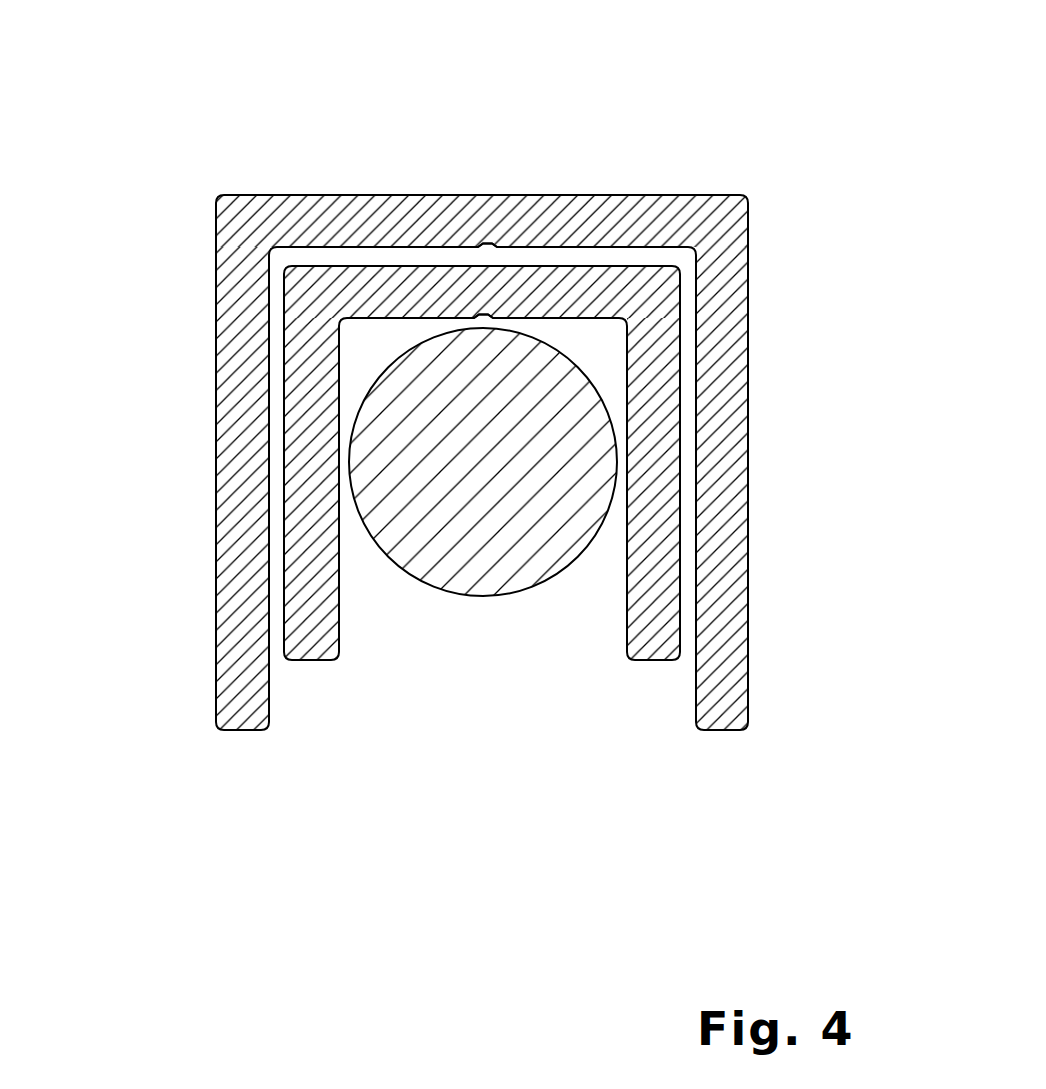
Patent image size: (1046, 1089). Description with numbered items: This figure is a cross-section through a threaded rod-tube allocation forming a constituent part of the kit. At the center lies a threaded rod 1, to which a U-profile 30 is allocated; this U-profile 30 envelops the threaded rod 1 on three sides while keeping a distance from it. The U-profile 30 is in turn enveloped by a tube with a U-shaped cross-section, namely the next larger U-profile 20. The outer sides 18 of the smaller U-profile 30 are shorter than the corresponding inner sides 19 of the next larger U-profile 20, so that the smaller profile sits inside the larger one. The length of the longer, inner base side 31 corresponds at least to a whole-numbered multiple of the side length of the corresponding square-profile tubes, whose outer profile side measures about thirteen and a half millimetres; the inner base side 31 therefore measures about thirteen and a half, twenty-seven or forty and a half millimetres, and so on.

The threaded rod 1 is at (578, 453).
The outer sides 18 is at (550, 265).
The inner sides 19 is at (347, 247).
The next larger U-profile 20 is at (728, 623).
The U-profile 30 is at (443, 290).
The inner base side 31 is at (519, 245).